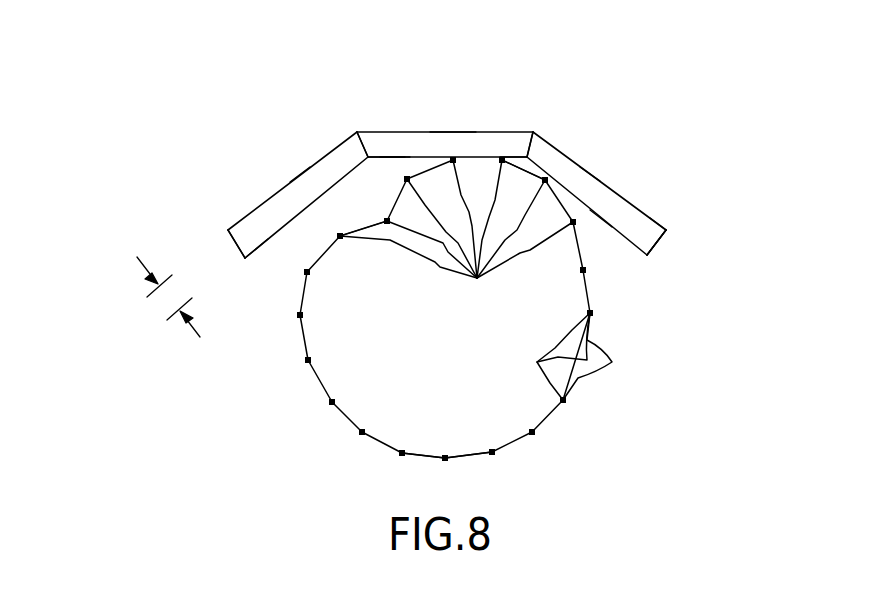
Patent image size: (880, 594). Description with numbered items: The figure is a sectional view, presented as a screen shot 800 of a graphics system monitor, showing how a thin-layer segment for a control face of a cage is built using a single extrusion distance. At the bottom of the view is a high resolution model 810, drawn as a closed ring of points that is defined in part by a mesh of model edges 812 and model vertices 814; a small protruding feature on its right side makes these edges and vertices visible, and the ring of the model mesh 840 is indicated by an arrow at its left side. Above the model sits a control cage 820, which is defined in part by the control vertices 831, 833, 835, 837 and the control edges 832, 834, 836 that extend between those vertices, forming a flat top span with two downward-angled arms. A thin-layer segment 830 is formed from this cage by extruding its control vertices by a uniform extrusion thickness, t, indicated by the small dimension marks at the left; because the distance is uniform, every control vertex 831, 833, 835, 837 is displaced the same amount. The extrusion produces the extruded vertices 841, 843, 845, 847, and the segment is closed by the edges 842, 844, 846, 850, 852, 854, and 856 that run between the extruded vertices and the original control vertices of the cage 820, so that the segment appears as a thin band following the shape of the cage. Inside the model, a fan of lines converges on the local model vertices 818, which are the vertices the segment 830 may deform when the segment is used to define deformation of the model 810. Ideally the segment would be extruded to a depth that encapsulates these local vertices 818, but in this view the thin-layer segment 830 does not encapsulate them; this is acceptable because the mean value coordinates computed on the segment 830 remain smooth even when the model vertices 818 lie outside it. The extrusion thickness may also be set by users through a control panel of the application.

The screen shot 800 is at (152, 88).
The high resolution model 810 is at (598, 463).
The model edges 812 is at (612, 362).
The model vertices 814 is at (537, 362).
The local model vertices 818 is at (456, 235).
The control cage 820 is at (632, 169).
The thin-layer segment 830 is at (240, 191).
The control vertex 831 is at (228, 230).
The control edge 832 is at (300, 175).
The control vertex 833 is at (357, 132).
The control edge 834 is at (453, 132).
The control vertex 835 is at (533, 132).
The control edge 836 is at (578, 165).
The control vertex 837 is at (666, 230).
The ring 840 is at (279, 276).
The extruded vertex 841 is at (245, 258).
The edge 842 is at (293, 219).
The extruded vertex 843 is at (372, 150).
The edge 844 is at (393, 160).
The extruded vertex 845 is at (527, 157).
The edge 846 is at (600, 218).
The extruded vertex 847 is at (647, 255).
The edge 850 is at (236, 245).
The edge 852 is at (355, 136).
The edge 854 is at (528, 145).
The edge 856 is at (657, 242).